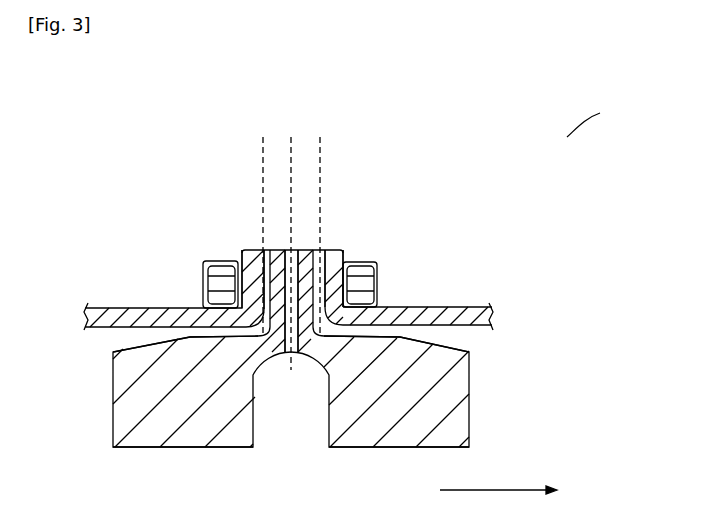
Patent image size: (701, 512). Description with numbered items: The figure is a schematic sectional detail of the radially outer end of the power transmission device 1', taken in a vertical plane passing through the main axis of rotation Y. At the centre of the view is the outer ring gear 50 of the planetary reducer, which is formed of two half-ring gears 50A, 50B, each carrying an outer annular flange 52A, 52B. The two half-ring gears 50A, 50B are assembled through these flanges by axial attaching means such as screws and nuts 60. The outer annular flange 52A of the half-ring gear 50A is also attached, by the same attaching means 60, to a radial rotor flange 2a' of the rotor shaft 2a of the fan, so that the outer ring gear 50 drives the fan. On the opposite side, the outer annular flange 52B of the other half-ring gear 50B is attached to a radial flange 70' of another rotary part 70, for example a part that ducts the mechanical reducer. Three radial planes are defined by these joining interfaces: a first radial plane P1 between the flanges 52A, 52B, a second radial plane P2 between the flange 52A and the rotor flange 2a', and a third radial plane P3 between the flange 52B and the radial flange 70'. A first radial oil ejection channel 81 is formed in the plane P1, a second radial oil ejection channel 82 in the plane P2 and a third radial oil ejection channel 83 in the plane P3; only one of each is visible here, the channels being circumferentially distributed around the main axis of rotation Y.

The power transmission device 1' is at (602, 113).
The rotor shaft 2a is at (174, 290).
The radial rotor flange 2a' is at (243, 251).
The outer ring gear 50 is at (502, 390).
The half-ring gear 50A is at (130, 408).
The half-ring gear 50B is at (442, 412).
The outer annular flange 52A is at (282, 250).
The outer annular flange 52B is at (303, 250).
The attaching means 60 is at (355, 260).
The rotary part 70 is at (409, 290).
The radial flange 70' is at (351, 250).
The first radial oil ejection channel 81 is at (298, 362).
The second radial oil ejection channel 82 is at (203, 270).
The third radial oil ejection channel 83 is at (377, 276).
The first radial plane P1 is at (292, 148).
The second radial plane P2 is at (262, 148).
The third radial plane P3 is at (320, 148).
The main axis of rotation Y is at (503, 479).